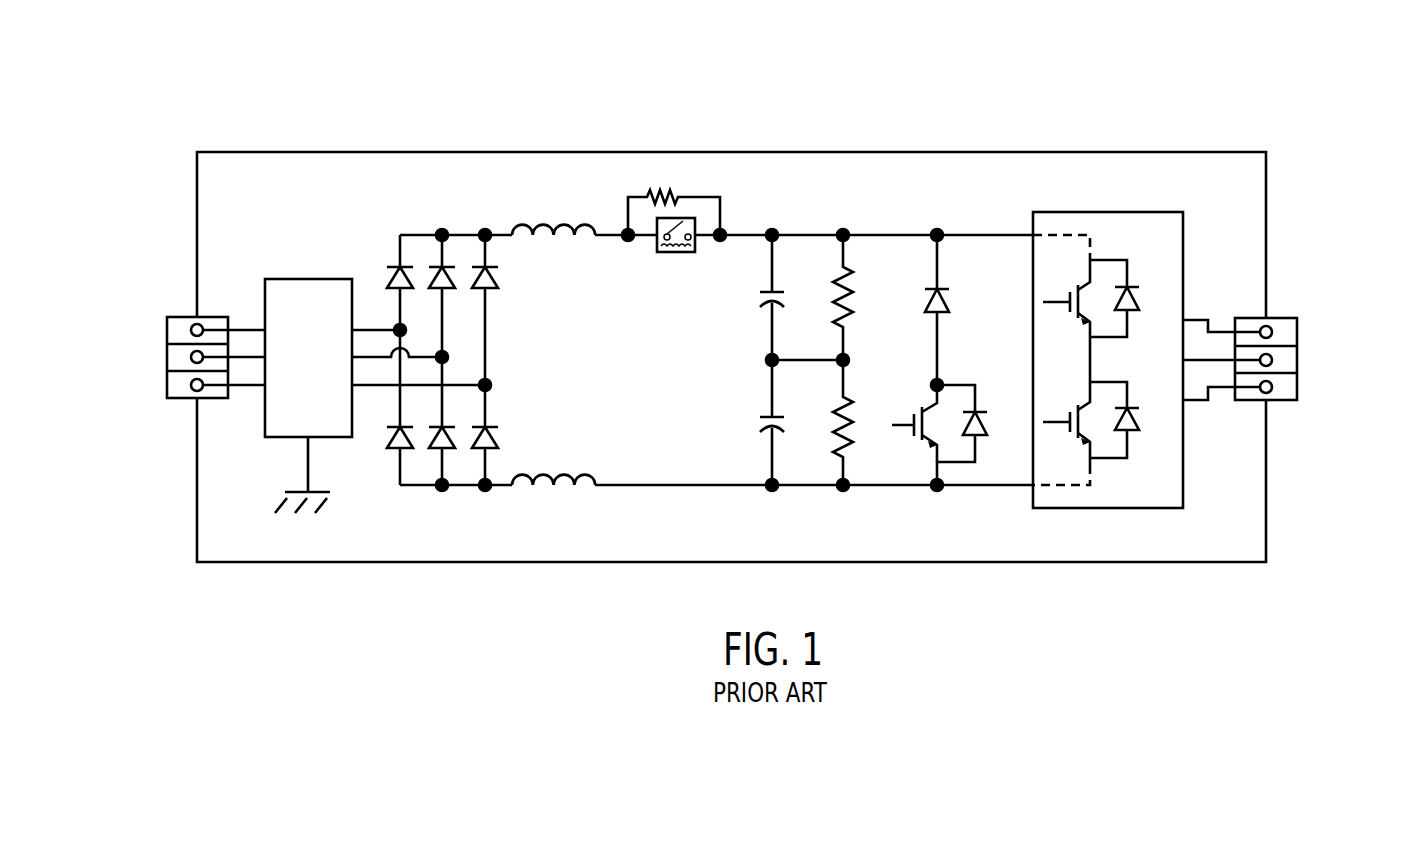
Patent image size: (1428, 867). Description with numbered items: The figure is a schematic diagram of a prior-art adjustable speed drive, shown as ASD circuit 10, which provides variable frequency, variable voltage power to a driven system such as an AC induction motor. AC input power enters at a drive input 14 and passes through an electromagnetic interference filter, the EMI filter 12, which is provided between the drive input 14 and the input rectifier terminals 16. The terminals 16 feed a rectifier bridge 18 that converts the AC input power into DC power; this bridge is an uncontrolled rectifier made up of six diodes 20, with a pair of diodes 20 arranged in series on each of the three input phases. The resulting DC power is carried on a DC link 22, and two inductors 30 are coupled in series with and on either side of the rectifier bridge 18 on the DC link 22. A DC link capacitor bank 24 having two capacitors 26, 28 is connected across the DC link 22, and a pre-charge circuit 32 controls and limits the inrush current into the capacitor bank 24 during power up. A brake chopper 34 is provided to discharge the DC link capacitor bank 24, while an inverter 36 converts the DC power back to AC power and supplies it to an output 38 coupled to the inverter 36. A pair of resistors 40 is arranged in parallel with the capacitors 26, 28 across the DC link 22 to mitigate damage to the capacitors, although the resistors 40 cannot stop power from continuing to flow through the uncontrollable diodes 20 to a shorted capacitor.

The ASD circuit 10 is at (1008, 92).
The electromagnetic interference (EMI) filter 12 is at (310, 279).
The drive input 14 is at (218, 317).
The input rectifier terminals 16 is at (414, 321).
The rectifier bridge 18 is at (477, 360).
The diodes 20 is at (452, 279).
The DC link 22 is at (683, 487).
The DC link capacitor bank 24 is at (745, 360).
The capacitor 26 is at (762, 300).
The capacitor 28 is at (762, 424).
The inductors 30 is at (543, 223).
The pre-charge circuit 32 is at (701, 174).
The brake chopper 34 is at (915, 448).
The inverter 36 is at (1164, 189).
The output 38 is at (1284, 318).
The resistors 40 is at (852, 282).